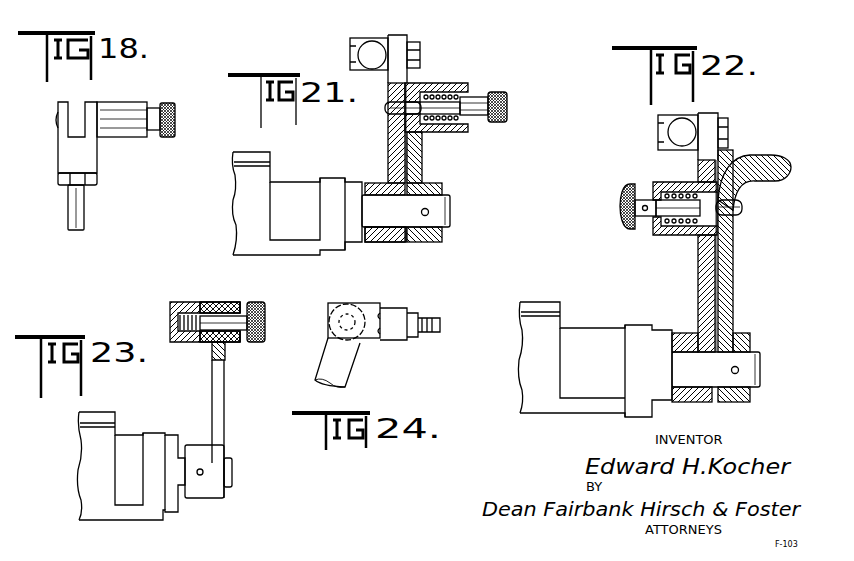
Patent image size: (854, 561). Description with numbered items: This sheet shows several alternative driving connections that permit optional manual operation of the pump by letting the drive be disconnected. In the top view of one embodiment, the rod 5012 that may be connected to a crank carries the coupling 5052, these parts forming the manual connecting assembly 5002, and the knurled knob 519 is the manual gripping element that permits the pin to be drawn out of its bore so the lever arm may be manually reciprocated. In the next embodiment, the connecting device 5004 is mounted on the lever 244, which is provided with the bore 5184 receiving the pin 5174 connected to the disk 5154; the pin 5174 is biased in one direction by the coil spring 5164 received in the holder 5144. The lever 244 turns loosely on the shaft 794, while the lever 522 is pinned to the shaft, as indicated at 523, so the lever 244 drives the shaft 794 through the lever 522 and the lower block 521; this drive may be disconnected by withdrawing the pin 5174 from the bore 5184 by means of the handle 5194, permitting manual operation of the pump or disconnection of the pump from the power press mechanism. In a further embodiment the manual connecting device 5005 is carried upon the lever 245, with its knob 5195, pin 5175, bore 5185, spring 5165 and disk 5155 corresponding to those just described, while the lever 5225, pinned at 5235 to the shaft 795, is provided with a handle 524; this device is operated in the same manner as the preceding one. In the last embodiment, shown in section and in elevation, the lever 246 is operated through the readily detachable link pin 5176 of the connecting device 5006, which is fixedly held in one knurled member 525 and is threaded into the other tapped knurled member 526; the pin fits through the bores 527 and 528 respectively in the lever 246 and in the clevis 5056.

In FIG. 18, the adjustable stop assembly 5002 is at (114, 150).
In FIG. 18, the coupling 5052 is at (62, 130).
In FIG. 18, the knurled knob 519 is at (176, 126).
In FIG. 18, the rod 5012 is at (84, 212).
In FIG. 21, the spring plunger assembly 5004 is at (440, 105).
In FIG. 21, the pin 5174 is at (390, 108).
In FIG. 21, the bore 5184 is at (390, 138).
In FIG. 21, the lever 244 is at (390, 163).
In FIG. 21, the disk 5154 is at (426, 130).
In FIG. 21, the holder 5144 is at (458, 124).
In FIG. 21, the coil spring 5164 is at (452, 128).
In FIG. 21, the handle 5194 is at (505, 89).
In FIG. 21, the lever 522 is at (418, 172).
In FIG. 21, the shaft 794 is at (450, 208).
In FIG. 23, the shaft 794 is at (233, 474).
In FIG. 21, the lower block 521 is at (383, 243).
In FIG. 21, the pin connection 523 is at (427, 216).
In FIG. 22, the spring plunger assembly 5005 is at (678, 186).
In FIG. 22, the handle 524 is at (776, 155).
In FIG. 22, the knurled knob 5195 is at (621, 190).
In FIG. 22, the plunger tip 5175 is at (742, 207).
In FIG. 22, the slot 5185 is at (734, 228).
In FIG. 22, the spring 5165 is at (665, 231).
In FIG. 22, the plunger body 5155 is at (704, 238).
In FIG. 22, the lever 5225 is at (733, 272).
In FIG. 22, the lever 245 is at (700, 305).
In FIG. 22, the pivot hole 5235 is at (738, 367).
In FIG. 22, the pin block 795 is at (698, 378).
In FIG. 23, the tapped knurled member 526 is at (172, 309).
In FIG. 23, the bore 527 is at (219, 303).
In FIG. 23, the bore 528 is at (190, 288).
In FIG. 23, the link pin 5176 is at (212, 341).
In FIG. 23, the clevis 5056 is at (227, 345).
In FIG. 23, the knurled member 525 is at (263, 343).
In FIG. 24, the knurled member 525 is at (332, 336).
In FIG. 23, the plunger assembly 5006 is at (272, 299).
In FIG. 24, the plunger assembly 5006 is at (360, 301).
In FIG. 23, the lever 246 is at (225, 390).